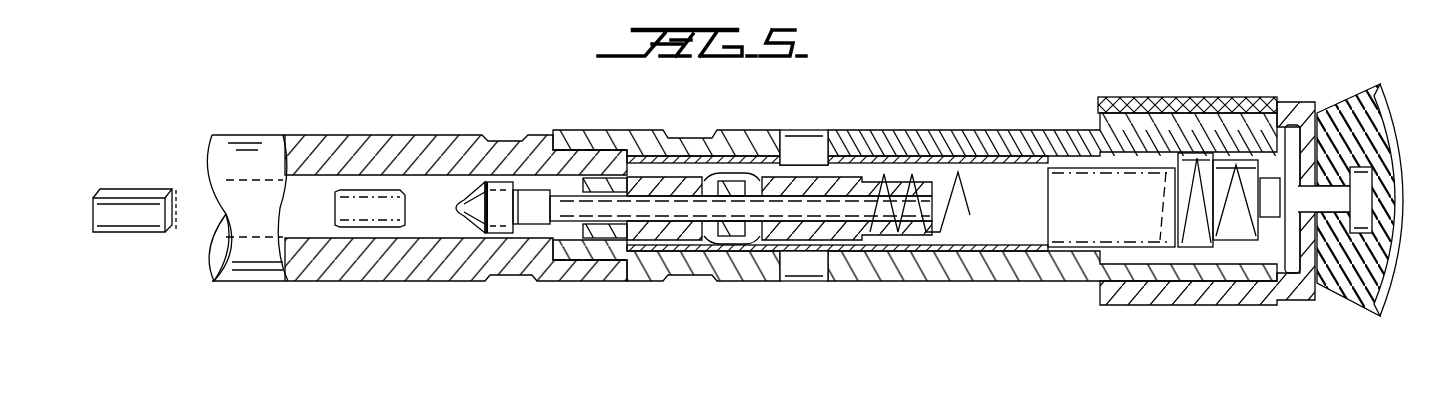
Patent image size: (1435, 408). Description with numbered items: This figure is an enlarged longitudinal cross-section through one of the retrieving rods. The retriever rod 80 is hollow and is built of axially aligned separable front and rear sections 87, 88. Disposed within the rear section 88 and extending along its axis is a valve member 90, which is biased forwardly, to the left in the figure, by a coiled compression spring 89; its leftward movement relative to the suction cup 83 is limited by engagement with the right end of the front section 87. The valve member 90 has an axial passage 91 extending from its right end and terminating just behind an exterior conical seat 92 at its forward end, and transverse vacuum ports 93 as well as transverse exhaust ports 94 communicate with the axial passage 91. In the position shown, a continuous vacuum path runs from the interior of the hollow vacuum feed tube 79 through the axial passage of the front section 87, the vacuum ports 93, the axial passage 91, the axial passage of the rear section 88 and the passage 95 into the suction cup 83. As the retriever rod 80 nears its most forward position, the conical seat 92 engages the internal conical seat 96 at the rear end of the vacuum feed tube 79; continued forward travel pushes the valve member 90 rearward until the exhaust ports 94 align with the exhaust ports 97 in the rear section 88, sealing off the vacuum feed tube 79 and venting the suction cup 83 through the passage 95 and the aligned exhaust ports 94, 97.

The vacuum feed tube 79 is at (132, 171).
The internal conical seat 96 is at (178, 196).
The front section 87 is at (378, 119).
The exterior conical seat 92 is at (443, 200).
The transverse vacuum ports 93 is at (597, 185).
The retriever rod 80 is at (692, 109).
The axial passage 91 is at (660, 200).
The transverse exhaust ports 94 is at (733, 178).
The exhaust ports 97 is at (805, 140).
The rear section 88 is at (925, 130).
The coiled compression spring 89 is at (1075, 165).
The passage 95 is at (1190, 150).
The suction cup 83 is at (1345, 98).
The valve member 90 is at (668, 232).